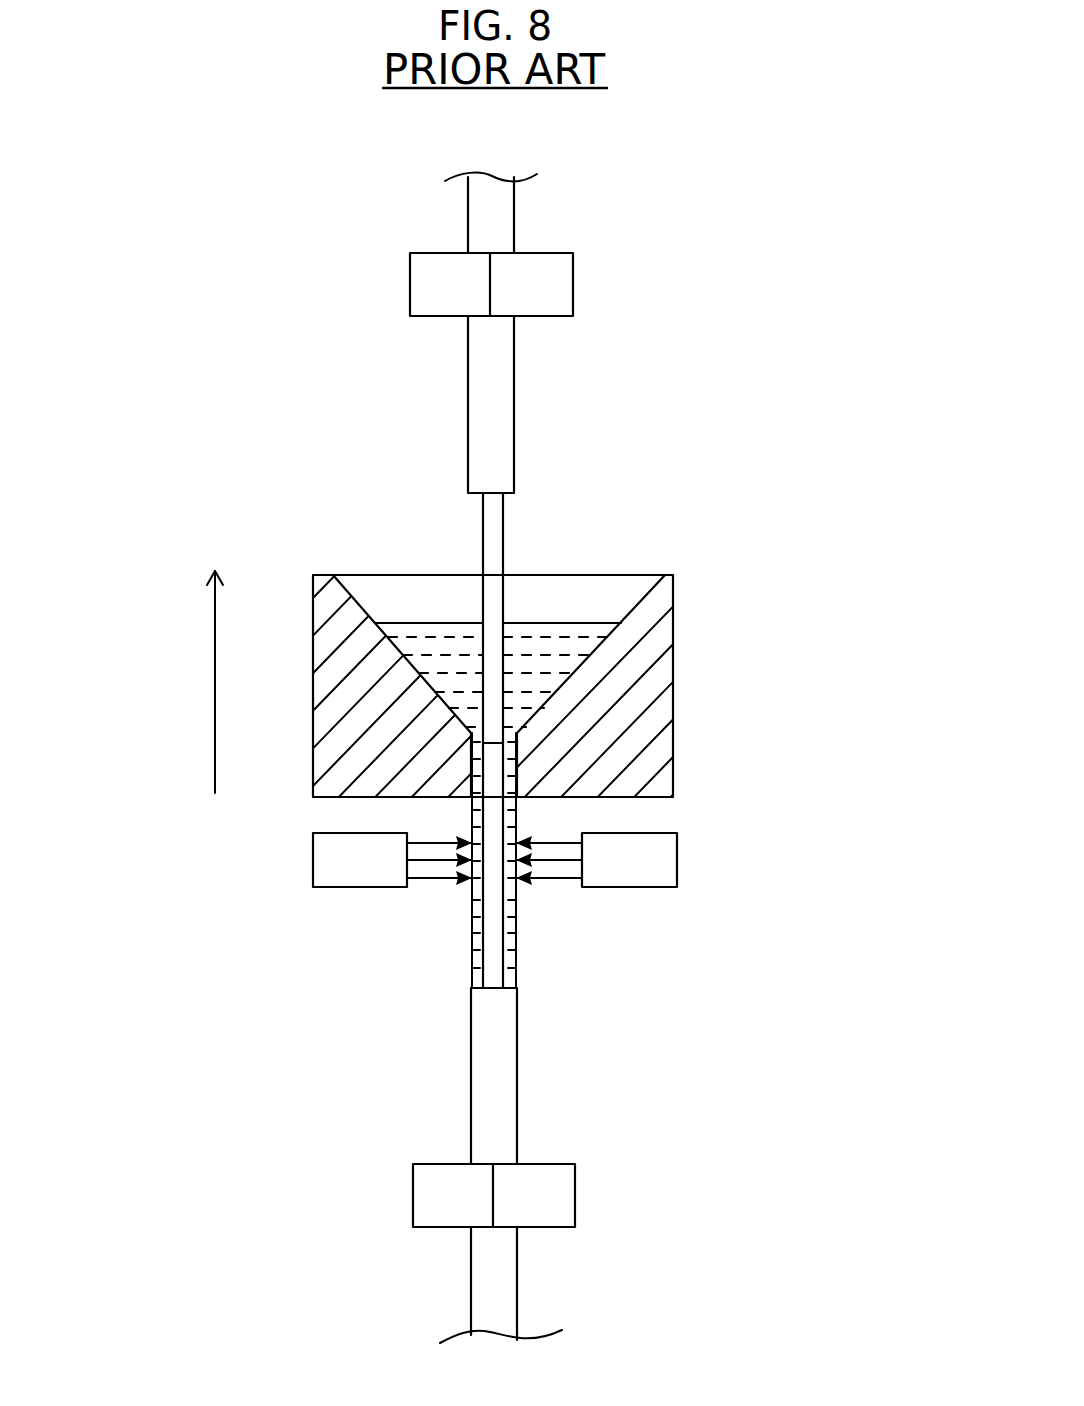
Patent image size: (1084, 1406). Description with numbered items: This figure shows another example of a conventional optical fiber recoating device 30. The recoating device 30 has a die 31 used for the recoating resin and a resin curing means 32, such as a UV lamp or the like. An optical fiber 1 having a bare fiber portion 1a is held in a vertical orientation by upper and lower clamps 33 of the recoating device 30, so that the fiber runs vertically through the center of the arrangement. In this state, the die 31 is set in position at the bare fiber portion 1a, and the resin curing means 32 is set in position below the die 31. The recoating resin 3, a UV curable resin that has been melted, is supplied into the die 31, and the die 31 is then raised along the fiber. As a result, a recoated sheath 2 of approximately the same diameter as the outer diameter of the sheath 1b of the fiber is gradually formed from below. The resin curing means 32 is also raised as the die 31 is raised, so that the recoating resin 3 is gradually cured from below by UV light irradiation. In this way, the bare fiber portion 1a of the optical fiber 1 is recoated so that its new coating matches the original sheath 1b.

The recoating device 30 is at (350, 297).
The optical fiber 1 is at (467, 427).
The bare fiber portion 1a is at (503, 547).
The sheath 1b is at (515, 412).
The recoated sheath 2 is at (471, 936).
The recoating resin 3 is at (535, 663).
The die 31 is at (673, 772).
The resin curing means 32 is at (313, 871).
The clamps 33 is at (573, 298).